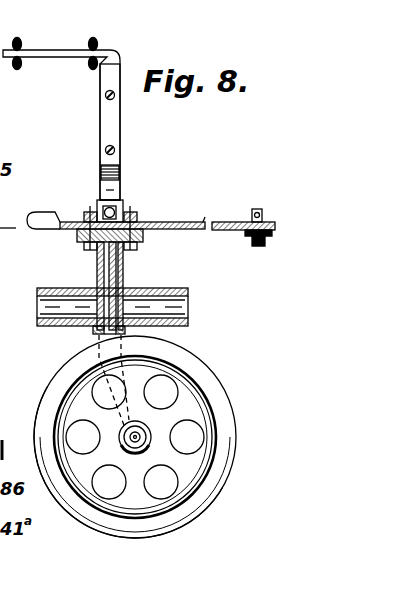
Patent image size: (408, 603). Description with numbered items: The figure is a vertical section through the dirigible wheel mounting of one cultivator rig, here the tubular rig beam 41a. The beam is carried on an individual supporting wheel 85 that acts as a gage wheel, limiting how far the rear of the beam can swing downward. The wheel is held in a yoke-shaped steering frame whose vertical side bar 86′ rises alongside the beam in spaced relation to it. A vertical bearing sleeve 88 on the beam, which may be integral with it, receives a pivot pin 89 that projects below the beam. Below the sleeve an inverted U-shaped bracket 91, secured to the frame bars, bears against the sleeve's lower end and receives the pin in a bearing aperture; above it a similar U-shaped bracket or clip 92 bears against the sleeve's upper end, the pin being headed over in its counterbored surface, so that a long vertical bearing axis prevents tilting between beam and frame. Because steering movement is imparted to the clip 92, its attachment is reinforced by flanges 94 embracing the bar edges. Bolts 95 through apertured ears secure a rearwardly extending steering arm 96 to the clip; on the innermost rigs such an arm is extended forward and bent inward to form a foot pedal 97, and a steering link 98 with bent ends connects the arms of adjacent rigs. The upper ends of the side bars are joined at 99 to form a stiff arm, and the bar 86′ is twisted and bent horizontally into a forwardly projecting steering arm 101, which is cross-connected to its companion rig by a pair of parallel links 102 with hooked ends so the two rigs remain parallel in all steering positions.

The supporting wheel 85 is at (73, 380).
The vertical side bar 86′ is at (100, 190).
The bearing sleeve 88 is at (98, 267).
The pivot pin 89 is at (108, 277).
The inverted U-shaped bracket 91 is at (125, 333).
The U-shaped bracket or clip 92 is at (116, 235).
The flanges 94 is at (121, 206).
The bolts 95 is at (90, 212).
The steering arm 96 is at (200, 219).
The foot pedal 97 is at (144, 236).
The steering link 98 is at (257, 209).
The joined upper ends of side bars 99 is at (100, 105).
The forwardly projecting steering arm 101 is at (47, 58).
The parallel links 102 is at (92, 44).
The rig beam 41a is at (188, 322).